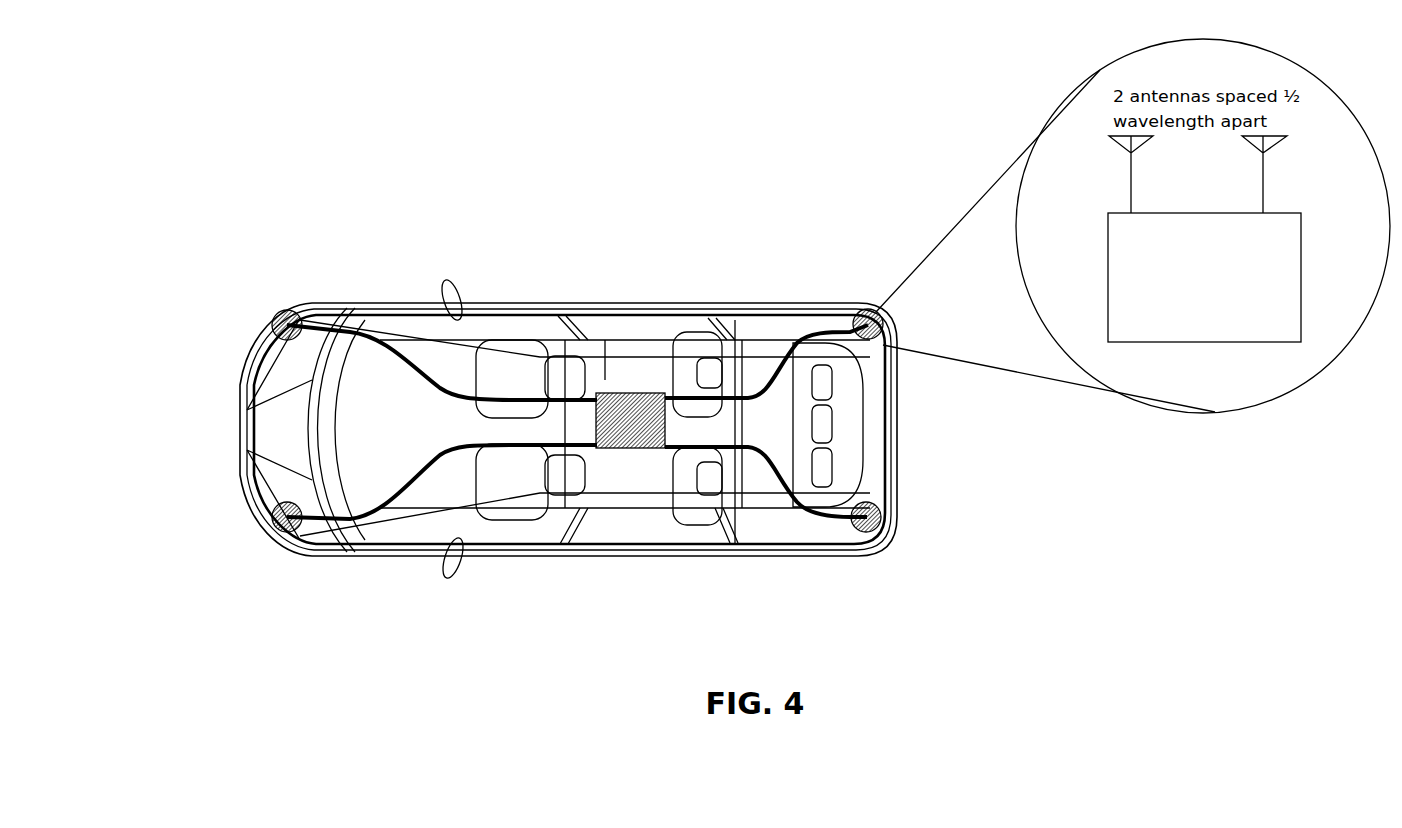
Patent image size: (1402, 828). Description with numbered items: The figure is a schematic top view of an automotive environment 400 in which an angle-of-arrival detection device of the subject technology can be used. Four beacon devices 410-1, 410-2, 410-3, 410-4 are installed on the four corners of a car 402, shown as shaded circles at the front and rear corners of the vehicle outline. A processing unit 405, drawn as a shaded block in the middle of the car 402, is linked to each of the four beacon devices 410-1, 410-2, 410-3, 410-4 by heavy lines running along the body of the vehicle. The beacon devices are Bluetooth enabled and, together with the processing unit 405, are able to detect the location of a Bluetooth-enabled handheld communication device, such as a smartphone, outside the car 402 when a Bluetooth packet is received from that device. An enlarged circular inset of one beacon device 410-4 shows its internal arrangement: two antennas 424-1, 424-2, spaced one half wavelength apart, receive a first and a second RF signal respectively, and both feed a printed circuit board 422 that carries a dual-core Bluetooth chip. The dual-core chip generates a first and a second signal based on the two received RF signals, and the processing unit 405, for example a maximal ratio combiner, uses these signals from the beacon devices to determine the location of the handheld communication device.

The automotive environment 400 is at (288, 88).
The car 402 is at (695, 305).
The processing unit 405 is at (630, 420).
The beacon device 410-1 is at (878, 537).
The beacon device 410-2 is at (275, 530).
The beacon device 410-3 is at (277, 315).
The beacon device 410-4 is at (878, 310).
The printed circuit (PC) board 422 is at (1220, 333).
The antenna 424-1 is at (1125, 193).
The antenna 424-2 is at (1265, 193).